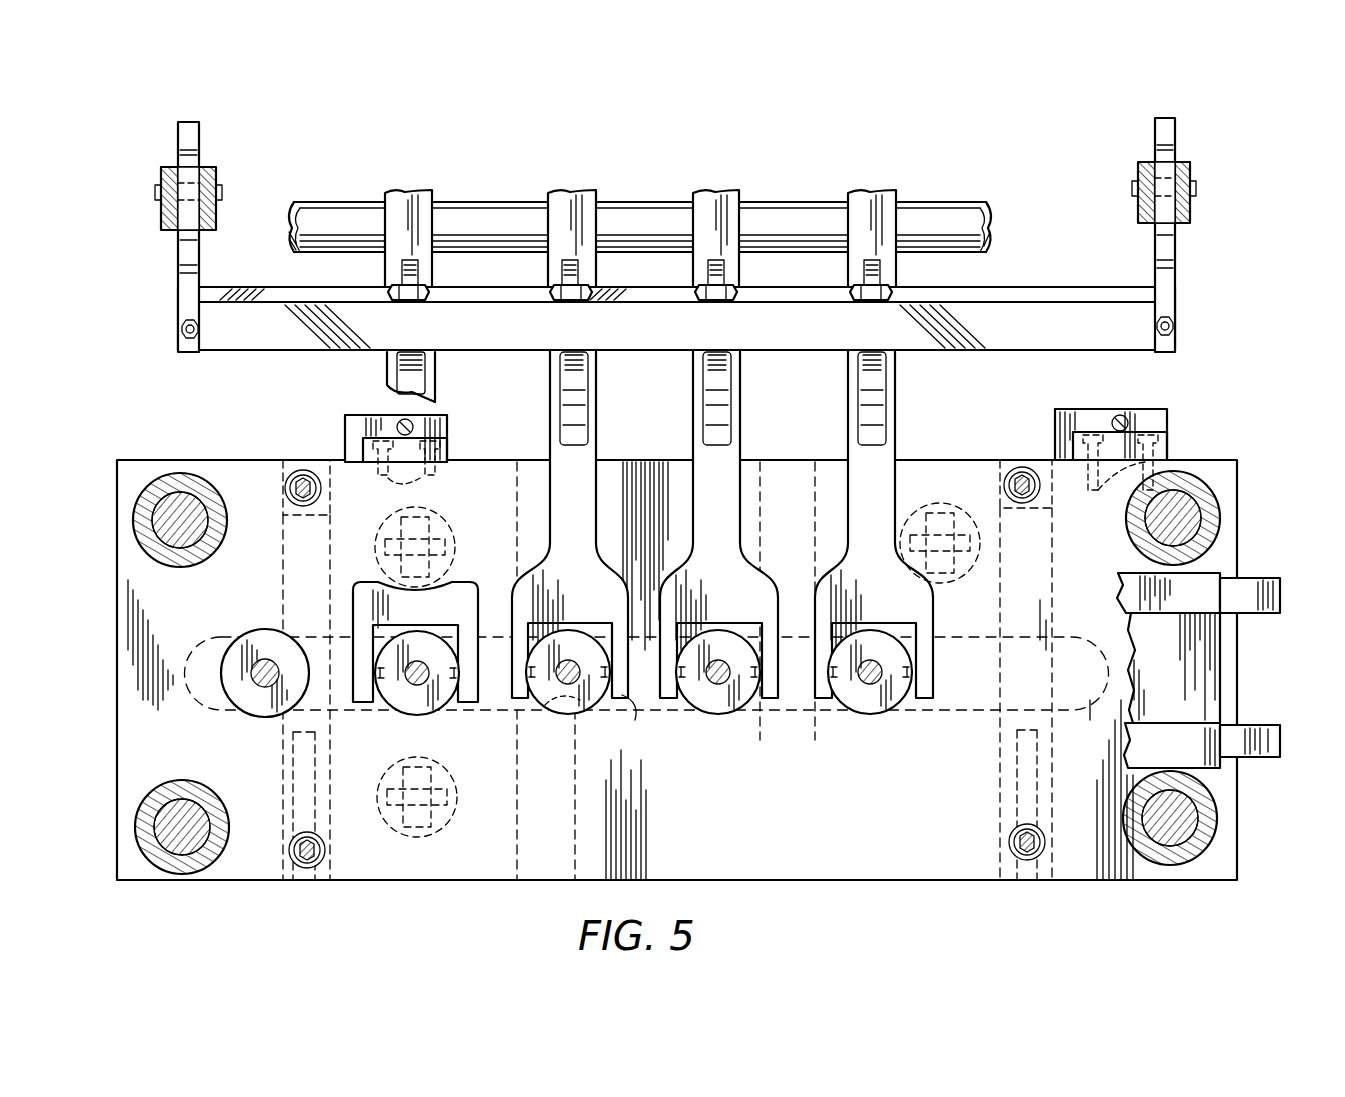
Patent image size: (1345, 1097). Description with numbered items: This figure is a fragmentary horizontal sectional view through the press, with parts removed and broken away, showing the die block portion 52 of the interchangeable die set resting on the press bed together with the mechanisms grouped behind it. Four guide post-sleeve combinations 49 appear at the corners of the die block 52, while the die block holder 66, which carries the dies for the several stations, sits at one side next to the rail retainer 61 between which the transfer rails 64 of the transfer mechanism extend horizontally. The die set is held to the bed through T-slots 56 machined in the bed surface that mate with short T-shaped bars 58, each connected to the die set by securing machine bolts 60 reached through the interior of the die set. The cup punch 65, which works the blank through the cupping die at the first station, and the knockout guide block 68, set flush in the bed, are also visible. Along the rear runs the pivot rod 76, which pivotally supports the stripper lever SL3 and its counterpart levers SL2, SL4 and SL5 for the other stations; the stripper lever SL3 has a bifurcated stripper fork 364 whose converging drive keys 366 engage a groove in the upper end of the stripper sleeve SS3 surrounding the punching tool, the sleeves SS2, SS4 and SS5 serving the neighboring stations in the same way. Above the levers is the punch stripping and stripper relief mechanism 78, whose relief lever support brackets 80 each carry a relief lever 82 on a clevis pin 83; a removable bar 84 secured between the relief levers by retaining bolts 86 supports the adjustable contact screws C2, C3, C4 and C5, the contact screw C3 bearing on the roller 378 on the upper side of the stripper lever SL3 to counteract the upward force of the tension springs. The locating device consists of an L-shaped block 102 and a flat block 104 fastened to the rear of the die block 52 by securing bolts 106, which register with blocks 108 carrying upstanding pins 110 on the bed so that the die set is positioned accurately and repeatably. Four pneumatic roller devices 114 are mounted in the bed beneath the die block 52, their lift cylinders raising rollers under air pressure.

The guide post-sleeve combinations 49 is at (150, 520).
The die block portion 52 is at (130, 683).
The T-slots 56 is at (282, 560).
The T-shaped bars 58 is at (320, 470).
The securing machine bolts 60 is at (303, 470).
The rail retainer 61 is at (1197, 738).
The transfer rails 64 is at (1280, 588).
The cup punch 65 is at (255, 630).
The die block holder 66 is at (1200, 668).
The knockout guide block 68 is at (220, 712).
The pivot rod 76 is at (806, 241).
The punch stripping and stripper relief mechanism 78 is at (168, 298).
The relief lever support brackets 80 is at (160, 228).
The relief lever 82 is at (178, 255).
The clevis pin 83 is at (155, 192).
The removable bar 84 is at (1044, 344).
The retaining bolts 86 is at (190, 340).
The L-shaped block 102 is at (1170, 438).
The flat block 104 is at (447, 448).
The securing bolts 106 is at (420, 482).
The blocks 108 is at (348, 445).
The upstanding pins 110 is at (412, 425).
The pneumatic roller devices 114 is at (436, 547).
The stripper fork 364 is at (635, 720).
The converging drive keys 366 is at (556, 708).
The roller 378 is at (588, 410).
The adjustable contact screw C2 is at (400, 360).
The adjustable contact screw C3 is at (560, 360).
The adjustable contact screw C4 is at (705, 360).
The adjustable contact screw C5 is at (860, 360).
The slide SL2 is at (435, 616).
The stripper lever SL3 is at (598, 534).
The slide SL4 is at (743, 534).
The slide SL5 is at (895, 534).
The slide stop SS2 is at (440, 700).
The stripper sleeve SS3 is at (572, 712).
The slide stop SS4 is at (732, 705).
The slide stop SS5 is at (880, 706).